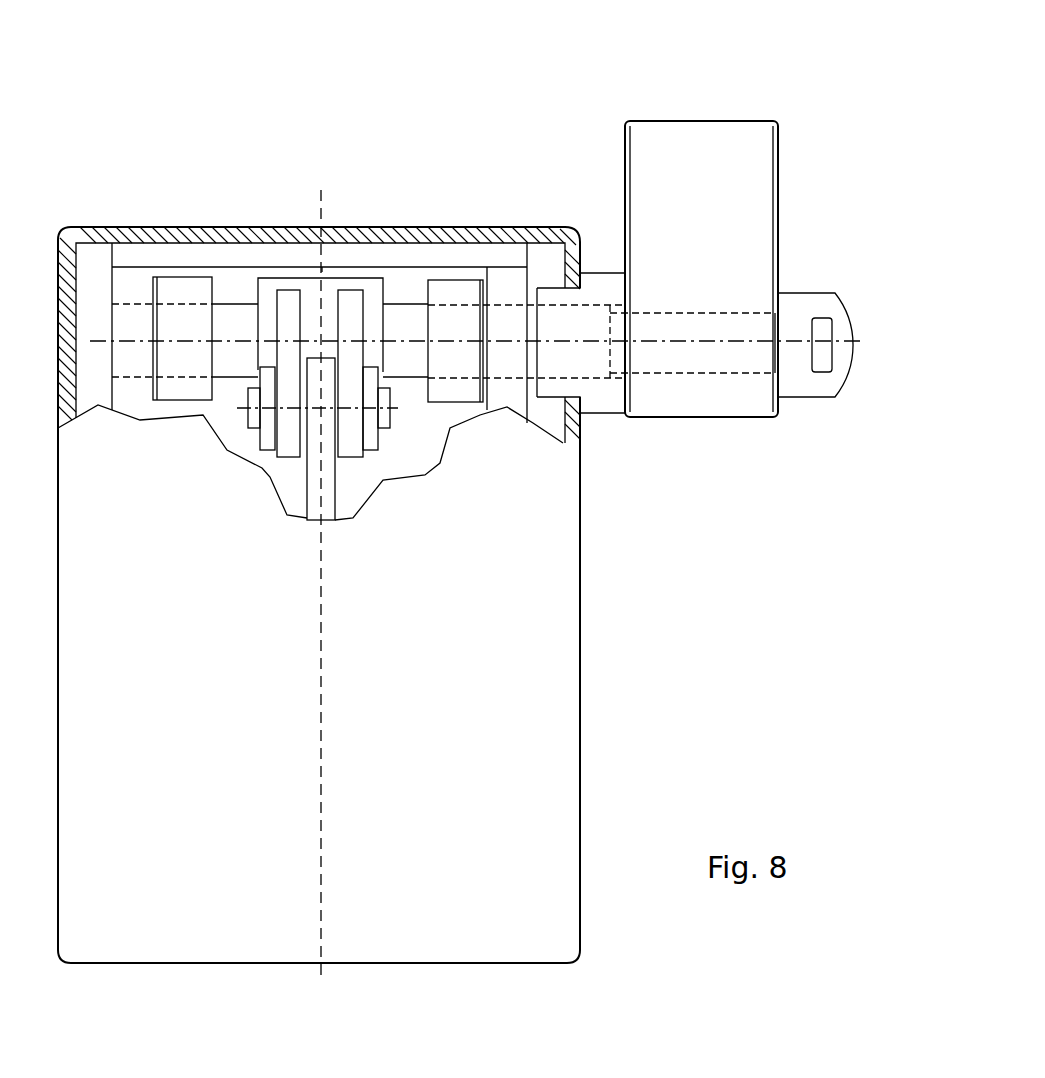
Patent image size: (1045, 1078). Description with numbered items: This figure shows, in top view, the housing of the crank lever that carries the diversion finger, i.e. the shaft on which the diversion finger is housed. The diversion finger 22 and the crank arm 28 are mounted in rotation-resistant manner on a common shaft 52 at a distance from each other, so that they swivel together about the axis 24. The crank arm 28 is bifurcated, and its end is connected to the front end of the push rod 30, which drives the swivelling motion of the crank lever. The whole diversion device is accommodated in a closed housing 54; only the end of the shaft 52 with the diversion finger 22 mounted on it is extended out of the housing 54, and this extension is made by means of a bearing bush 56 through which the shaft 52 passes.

The diversion finger 22 is at (695, 150).
The axis 24 is at (800, 348).
The crank arm 28 is at (348, 350).
The push rod 30 is at (305, 520).
The shaft 52 is at (405, 315).
The housing 54 is at (570, 652).
The bearing bush 56 is at (598, 285).